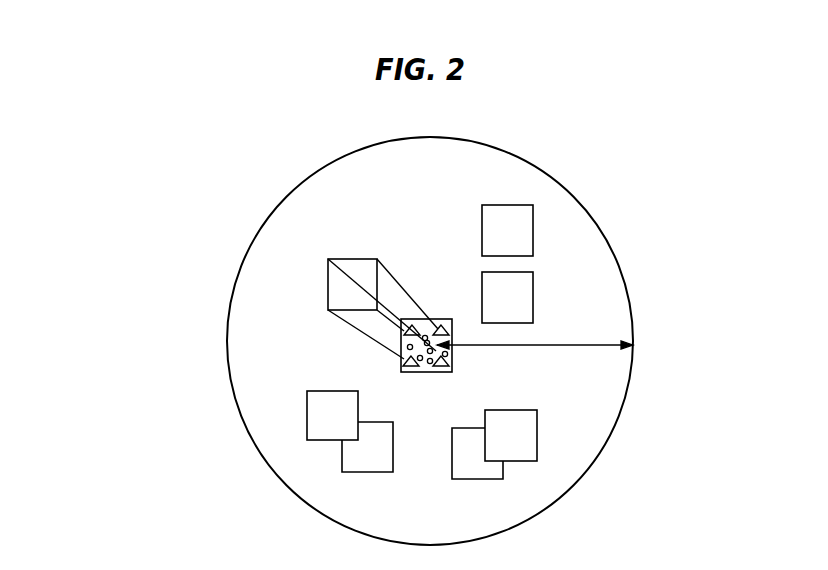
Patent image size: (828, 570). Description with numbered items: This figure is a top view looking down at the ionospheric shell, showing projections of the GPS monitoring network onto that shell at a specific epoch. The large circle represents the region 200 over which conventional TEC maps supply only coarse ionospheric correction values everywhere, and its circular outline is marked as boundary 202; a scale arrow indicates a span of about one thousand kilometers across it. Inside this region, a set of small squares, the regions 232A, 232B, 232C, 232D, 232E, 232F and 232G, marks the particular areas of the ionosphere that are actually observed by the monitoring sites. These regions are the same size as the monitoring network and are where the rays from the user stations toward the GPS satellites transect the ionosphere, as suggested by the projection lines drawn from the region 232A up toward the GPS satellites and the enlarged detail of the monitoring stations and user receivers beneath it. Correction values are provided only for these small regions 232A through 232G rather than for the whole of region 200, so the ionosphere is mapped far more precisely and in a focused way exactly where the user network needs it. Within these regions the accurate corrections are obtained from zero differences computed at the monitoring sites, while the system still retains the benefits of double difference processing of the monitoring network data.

The region 200 is at (262, 213).
The coverage region boundary 202 is at (283, 460).
The mapped ionospheric region 232A is at (328, 293).
The mapped ionospheric region 232B is at (517, 205).
The mapped ionospheric region 232C is at (533, 283).
The mapped ionospheric region 232D is at (537, 430).
The mapped ionospheric region 232E is at (480, 479).
The mapped ionospheric region 232F is at (365, 472).
The mapped ionospheric region 232G is at (307, 412).